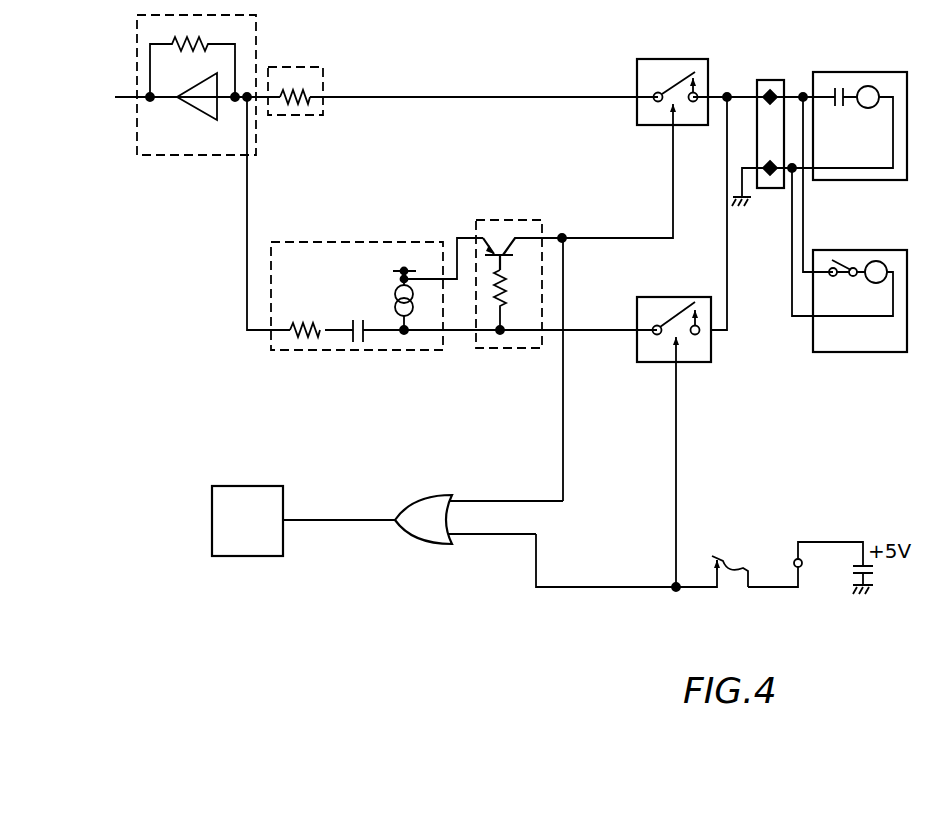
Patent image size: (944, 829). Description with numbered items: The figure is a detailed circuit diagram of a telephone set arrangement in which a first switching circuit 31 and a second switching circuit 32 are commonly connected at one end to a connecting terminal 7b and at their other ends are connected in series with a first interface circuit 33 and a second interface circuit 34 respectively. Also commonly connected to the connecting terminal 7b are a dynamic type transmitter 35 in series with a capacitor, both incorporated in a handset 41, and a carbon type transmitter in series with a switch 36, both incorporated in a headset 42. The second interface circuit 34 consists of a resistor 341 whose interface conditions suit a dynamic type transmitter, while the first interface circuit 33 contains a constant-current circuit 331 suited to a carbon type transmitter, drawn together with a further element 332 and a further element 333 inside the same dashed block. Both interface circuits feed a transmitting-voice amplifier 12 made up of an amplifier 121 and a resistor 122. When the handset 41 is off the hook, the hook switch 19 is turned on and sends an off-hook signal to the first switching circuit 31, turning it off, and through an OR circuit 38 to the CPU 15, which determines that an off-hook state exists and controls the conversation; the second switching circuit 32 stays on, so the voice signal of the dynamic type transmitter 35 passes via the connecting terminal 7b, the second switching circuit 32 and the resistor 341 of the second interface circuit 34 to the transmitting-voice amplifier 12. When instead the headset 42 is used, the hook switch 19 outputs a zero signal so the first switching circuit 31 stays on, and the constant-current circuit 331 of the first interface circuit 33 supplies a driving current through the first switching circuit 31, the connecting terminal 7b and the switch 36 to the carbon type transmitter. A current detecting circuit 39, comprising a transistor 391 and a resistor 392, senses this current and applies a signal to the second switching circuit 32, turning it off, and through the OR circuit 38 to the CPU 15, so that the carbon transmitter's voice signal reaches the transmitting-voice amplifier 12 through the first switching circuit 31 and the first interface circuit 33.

The transmitting-voice amplifier 12 is at (133, 45).
The amplifier 121 is at (200, 113).
The resistor 122 is at (195, 44).
The second interface circuit 34 is at (283, 67).
The resistor 341 is at (308, 90).
The first interface circuit 33 is at (387, 242).
The constant-current circuit 331 is at (393, 307).
The capacitor 332 is at (360, 347).
The resistor 333 is at (298, 342).
The current detecting circuit 39 is at (497, 220).
The transistor 391 is at (513, 252).
The resistor 392 is at (508, 290).
The second switching circuit 32 is at (667, 58).
The first switching circuit 31 is at (679, 297).
The connecting terminal 7b is at (773, 80).
The dynamic type transmitter 35 is at (865, 86).
The handset 41 is at (882, 72).
The switch 36 is at (845, 260).
The headset 42 is at (870, 248).
The CPU 15 is at (237, 486).
The OR circuit 38 is at (436, 495).
The hook switch 19 is at (744, 565).